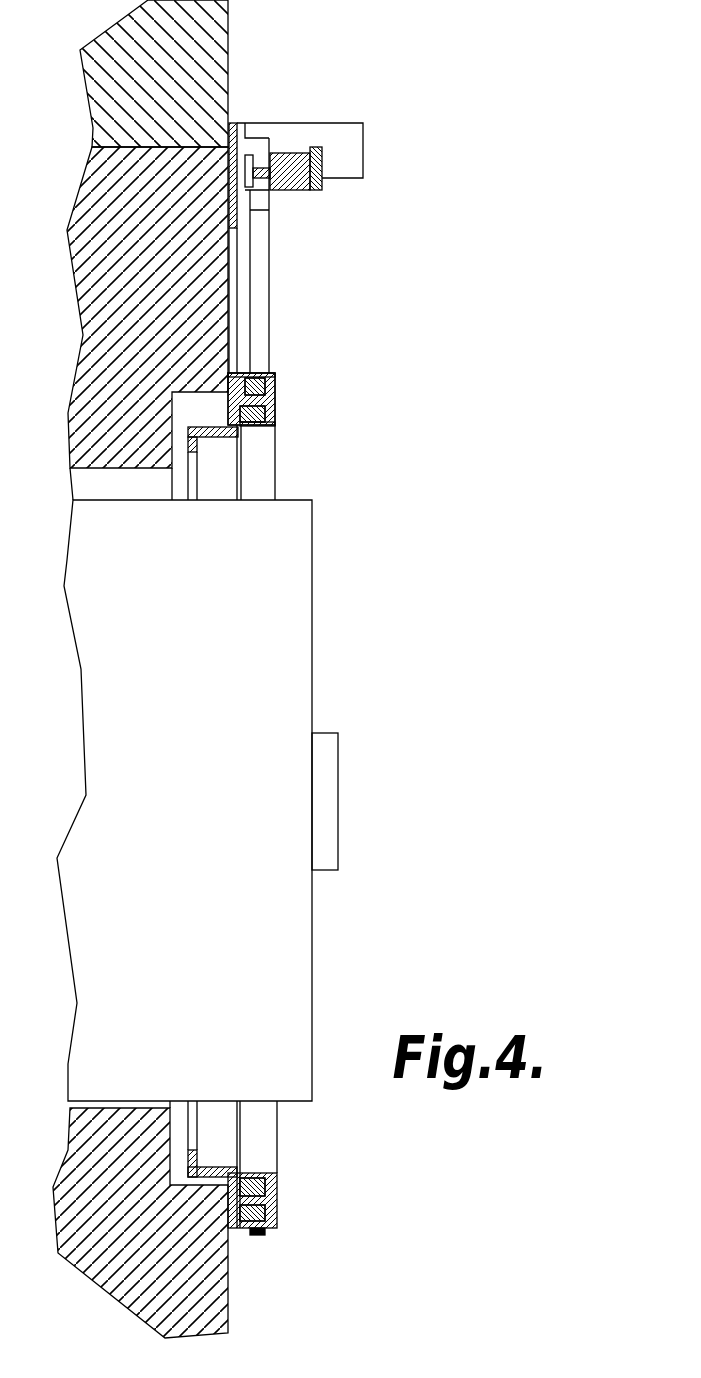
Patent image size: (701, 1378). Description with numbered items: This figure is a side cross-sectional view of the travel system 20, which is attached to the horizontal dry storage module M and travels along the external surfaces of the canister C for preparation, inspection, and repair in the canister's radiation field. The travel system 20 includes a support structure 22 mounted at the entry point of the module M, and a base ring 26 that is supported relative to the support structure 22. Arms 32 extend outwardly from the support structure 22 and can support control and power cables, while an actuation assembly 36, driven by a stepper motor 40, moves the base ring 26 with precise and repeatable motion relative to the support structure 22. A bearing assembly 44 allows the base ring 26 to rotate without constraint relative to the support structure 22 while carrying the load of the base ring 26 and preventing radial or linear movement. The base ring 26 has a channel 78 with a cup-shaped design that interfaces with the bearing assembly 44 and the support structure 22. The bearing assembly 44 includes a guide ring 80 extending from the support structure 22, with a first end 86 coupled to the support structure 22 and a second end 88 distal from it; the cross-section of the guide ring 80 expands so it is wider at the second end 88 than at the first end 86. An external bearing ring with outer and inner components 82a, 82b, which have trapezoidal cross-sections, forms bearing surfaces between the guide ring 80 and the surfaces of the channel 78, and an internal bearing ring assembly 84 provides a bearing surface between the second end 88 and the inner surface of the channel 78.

The travel system 20 is at (282, 220).
The support structure 22 is at (232, 217).
The base ring 26 is at (276, 410).
The arms 32 is at (347, 123).
The actuation assembly 36 is at (269, 297).
The stepper motor 40 is at (300, 190).
The bearing assembly 44 is at (234, 378).
The channel 78 is at (300, 411).
The guide ring 80 is at (193, 427).
The outer component 82a is at (255, 372).
The inner component 82b is at (257, 429).
The internal bearing ring assembly 84 is at (276, 393).
The first end 86 is at (248, 1175).
The second end 88 is at (240, 1208).
The canister C is at (312, 605).
The horizontal dry storage module M is at (228, 1303).